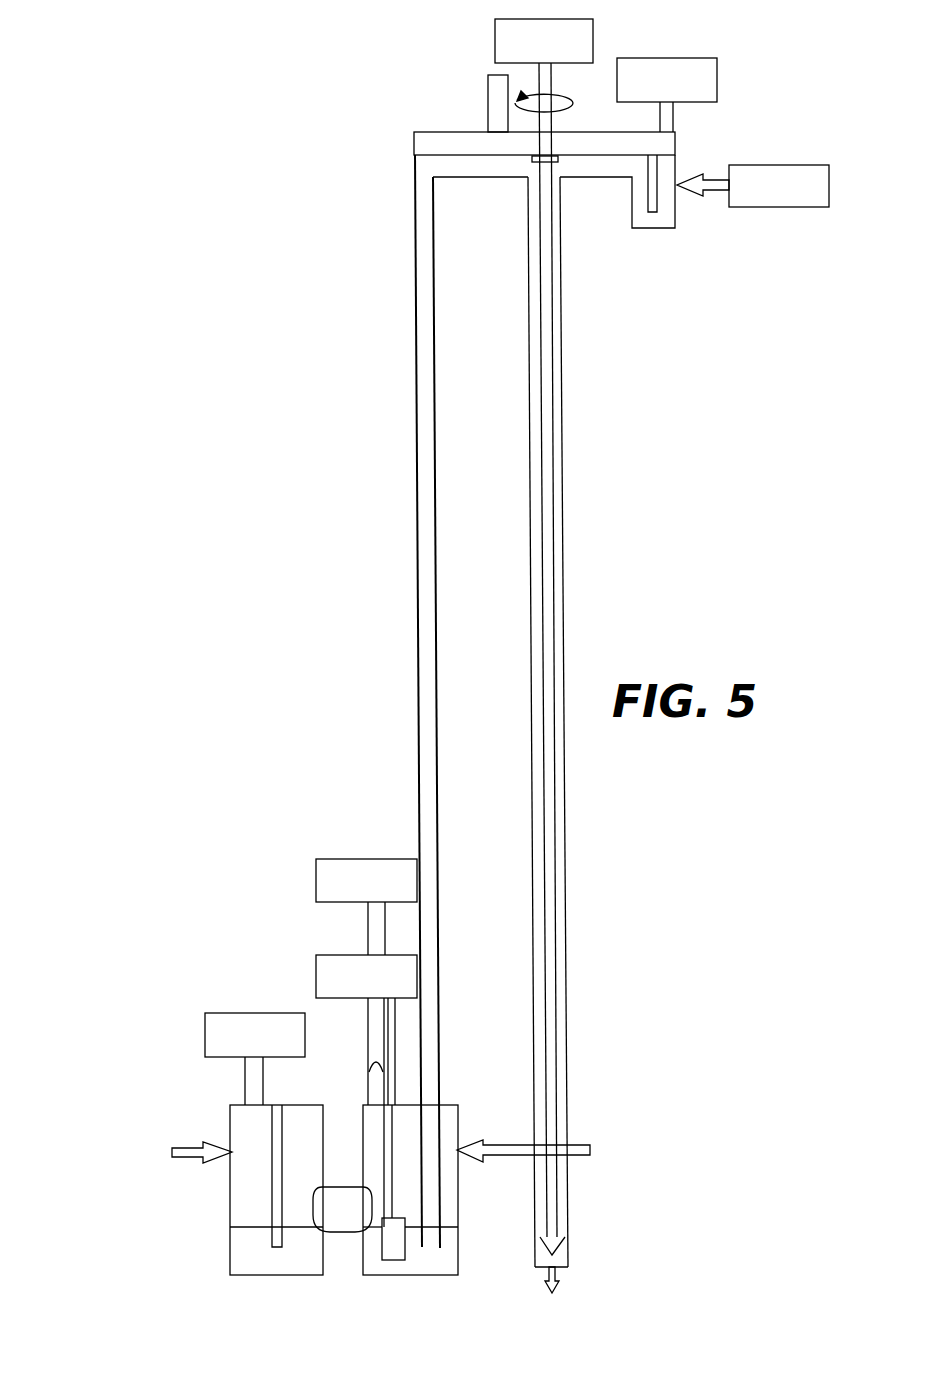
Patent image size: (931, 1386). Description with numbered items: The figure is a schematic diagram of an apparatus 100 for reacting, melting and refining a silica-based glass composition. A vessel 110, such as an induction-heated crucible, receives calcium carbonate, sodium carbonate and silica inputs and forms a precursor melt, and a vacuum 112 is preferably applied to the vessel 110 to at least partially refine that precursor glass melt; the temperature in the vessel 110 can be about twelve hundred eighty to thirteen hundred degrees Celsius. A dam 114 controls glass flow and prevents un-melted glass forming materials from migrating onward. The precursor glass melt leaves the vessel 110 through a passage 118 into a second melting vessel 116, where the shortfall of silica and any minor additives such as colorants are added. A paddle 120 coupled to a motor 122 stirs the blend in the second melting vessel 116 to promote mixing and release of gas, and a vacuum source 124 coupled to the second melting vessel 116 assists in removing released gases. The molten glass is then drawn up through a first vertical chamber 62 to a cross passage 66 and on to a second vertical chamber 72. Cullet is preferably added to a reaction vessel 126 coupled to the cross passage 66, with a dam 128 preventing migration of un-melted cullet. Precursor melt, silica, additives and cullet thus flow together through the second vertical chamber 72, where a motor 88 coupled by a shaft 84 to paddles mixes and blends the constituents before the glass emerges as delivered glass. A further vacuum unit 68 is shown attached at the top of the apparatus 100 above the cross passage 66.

The apparatus 100 is at (447, 668).
The motor 88 is at (593, 24).
The shaft 84 is at (553, 483).
The cross passage 66 is at (442, 130).
The vacuum source 68 is at (716, 64).
The first vertical chamber 62 is at (417, 456).
The second vertical chamber 72 is at (565, 412).
The reaction vessel 126 is at (662, 230).
The dam 128 is at (655, 175).
The vacuum source 124 is at (316, 880).
The motor 122 is at (316, 975).
The vacuum 112 is at (205, 1035).
The vessel 110 is at (230, 1213).
The dam 114 is at (277, 1243).
The passage 118 is at (342, 1220).
The second melting vessel 116 is at (370, 1275).
The paddle 120 is at (398, 1253).